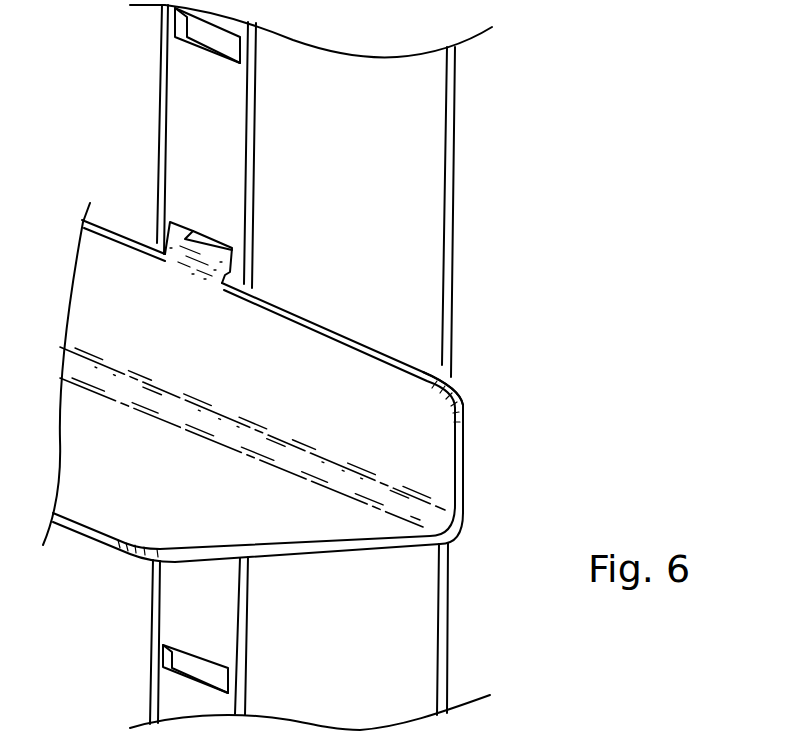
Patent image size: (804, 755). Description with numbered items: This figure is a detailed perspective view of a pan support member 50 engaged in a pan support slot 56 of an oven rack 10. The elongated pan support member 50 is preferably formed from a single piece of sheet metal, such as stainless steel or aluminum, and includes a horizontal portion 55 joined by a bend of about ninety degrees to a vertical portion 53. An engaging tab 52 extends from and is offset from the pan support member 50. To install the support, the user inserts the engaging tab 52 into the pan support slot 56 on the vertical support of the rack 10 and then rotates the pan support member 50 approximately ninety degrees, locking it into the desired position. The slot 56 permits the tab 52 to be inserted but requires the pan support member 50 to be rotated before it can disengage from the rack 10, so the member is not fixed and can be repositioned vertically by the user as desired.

The oven rack 10 is at (418, 182).
The pan support member 50 is at (435, 402).
The engaging tab 52 is at (158, 243).
The vertical portion 53 is at (435, 455).
The horizontal portion 55 is at (130, 502).
The pan support slot 56 is at (203, 228).